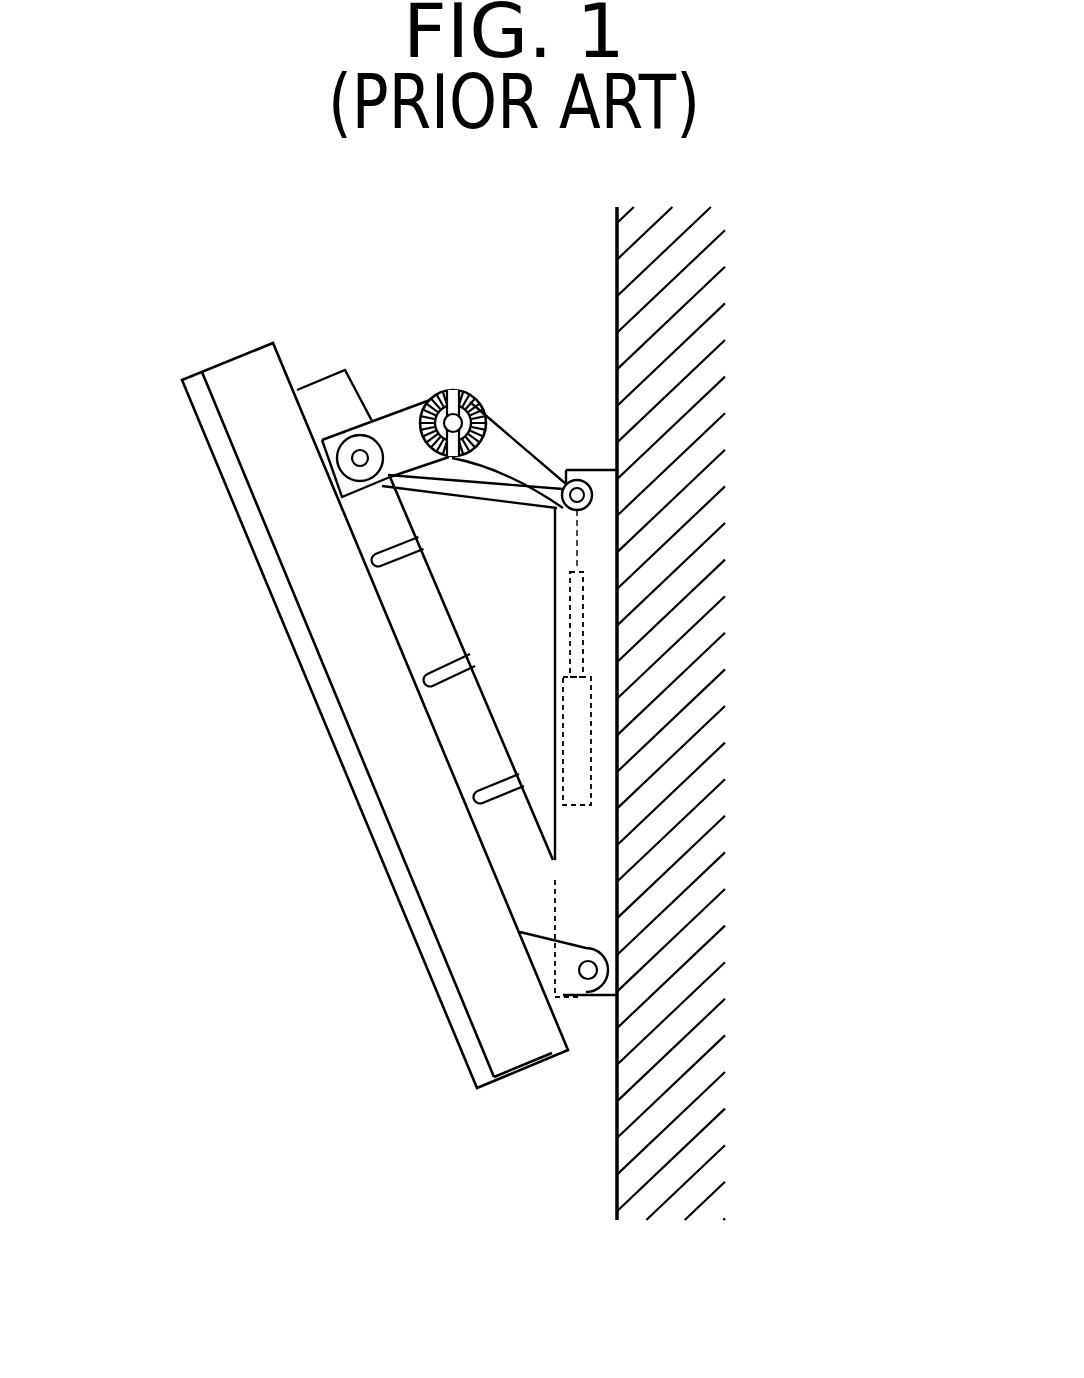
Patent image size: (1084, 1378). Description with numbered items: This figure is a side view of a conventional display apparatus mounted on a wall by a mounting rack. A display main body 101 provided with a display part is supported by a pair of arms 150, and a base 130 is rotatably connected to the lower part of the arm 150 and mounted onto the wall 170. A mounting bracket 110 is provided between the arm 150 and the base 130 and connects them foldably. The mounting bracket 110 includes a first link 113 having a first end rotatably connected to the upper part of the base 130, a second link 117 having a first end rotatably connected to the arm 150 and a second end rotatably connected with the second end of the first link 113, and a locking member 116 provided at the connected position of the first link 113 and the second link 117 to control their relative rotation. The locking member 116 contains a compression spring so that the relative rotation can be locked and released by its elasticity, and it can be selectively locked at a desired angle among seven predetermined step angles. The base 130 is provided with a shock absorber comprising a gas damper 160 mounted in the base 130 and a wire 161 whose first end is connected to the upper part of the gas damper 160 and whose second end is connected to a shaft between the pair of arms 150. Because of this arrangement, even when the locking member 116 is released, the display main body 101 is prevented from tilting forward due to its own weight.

The display main body 101 is at (424, 963).
The arm 150 is at (327, 388).
The mounting bracket 110 is at (457, 414).
The second link 117 is at (410, 417).
The locking member 116 is at (448, 393).
The first link 113 is at (517, 457).
The wire 161 is at (520, 505).
The base 130 is at (600, 578).
The gas damper 160 is at (580, 712).
The wall 170 is at (624, 821).